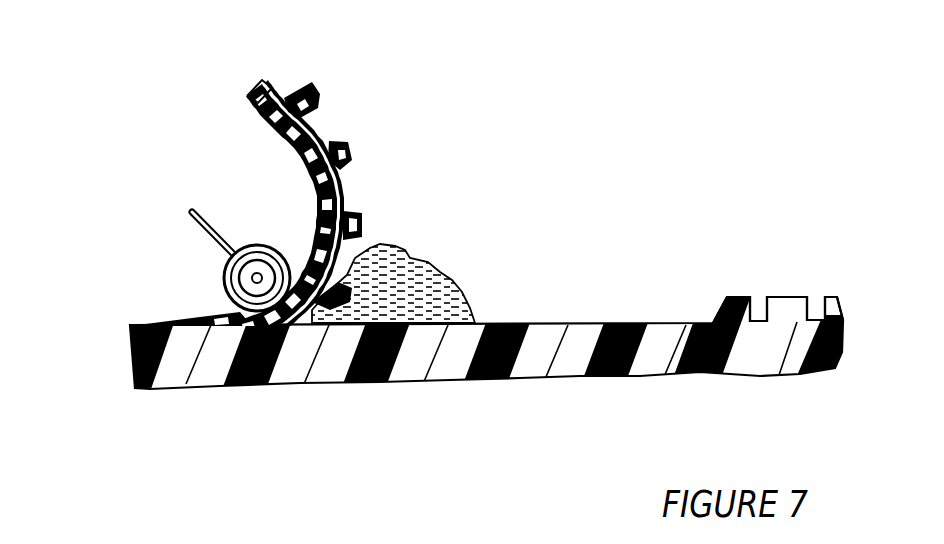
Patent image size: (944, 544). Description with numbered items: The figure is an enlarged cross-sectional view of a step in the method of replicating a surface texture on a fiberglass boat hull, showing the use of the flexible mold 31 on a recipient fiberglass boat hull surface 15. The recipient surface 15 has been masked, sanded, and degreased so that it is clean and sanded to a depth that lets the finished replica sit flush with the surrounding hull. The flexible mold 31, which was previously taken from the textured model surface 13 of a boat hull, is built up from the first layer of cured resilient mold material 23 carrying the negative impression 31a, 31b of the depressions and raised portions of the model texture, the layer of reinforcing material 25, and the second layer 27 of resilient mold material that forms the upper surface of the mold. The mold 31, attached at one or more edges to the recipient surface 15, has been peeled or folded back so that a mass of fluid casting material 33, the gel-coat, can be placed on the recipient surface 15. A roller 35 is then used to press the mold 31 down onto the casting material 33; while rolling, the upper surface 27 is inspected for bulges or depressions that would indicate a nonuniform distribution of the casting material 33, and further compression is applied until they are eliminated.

The model surface 13 is at (837, 300).
The recipient fiberglass boat hull surface 15 is at (624, 323).
The first layer of cured resilient mold material 23 is at (308, 88).
The layer of reinforcing material 25 is at (253, 90).
The second layer of resilient mold material 27 is at (274, 117).
The flexible mold 31 is at (123, 198).
The negative impression 31a is at (350, 154).
The negative impression 31b is at (345, 183).
The mass of fluid casting material 33 is at (466, 287).
The roller 35 is at (223, 252).